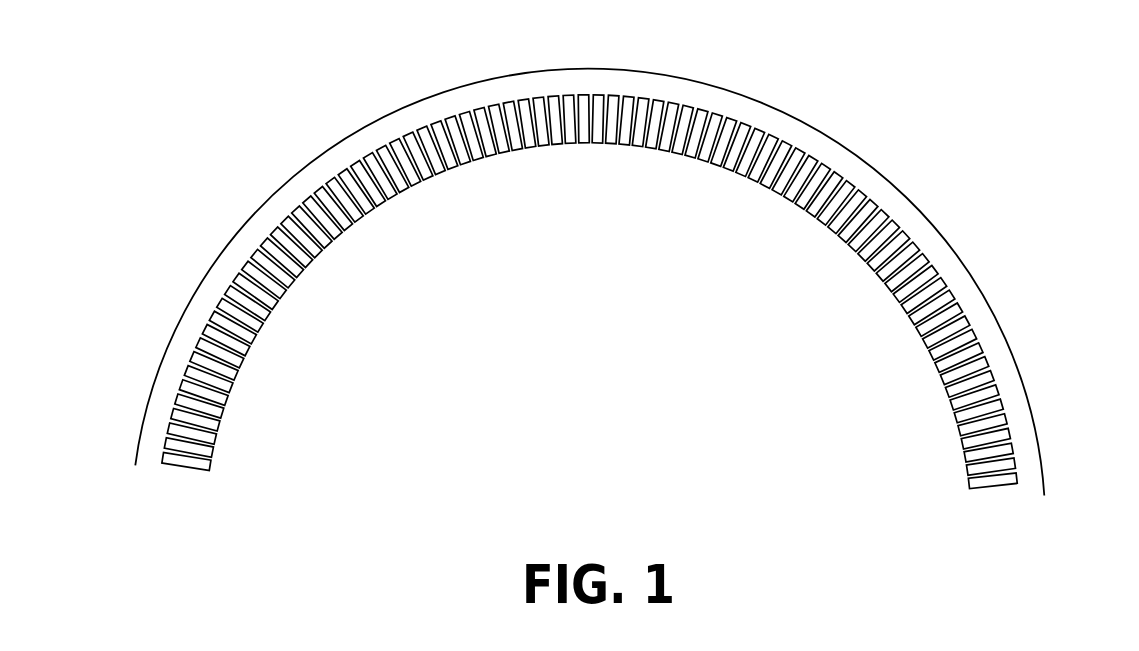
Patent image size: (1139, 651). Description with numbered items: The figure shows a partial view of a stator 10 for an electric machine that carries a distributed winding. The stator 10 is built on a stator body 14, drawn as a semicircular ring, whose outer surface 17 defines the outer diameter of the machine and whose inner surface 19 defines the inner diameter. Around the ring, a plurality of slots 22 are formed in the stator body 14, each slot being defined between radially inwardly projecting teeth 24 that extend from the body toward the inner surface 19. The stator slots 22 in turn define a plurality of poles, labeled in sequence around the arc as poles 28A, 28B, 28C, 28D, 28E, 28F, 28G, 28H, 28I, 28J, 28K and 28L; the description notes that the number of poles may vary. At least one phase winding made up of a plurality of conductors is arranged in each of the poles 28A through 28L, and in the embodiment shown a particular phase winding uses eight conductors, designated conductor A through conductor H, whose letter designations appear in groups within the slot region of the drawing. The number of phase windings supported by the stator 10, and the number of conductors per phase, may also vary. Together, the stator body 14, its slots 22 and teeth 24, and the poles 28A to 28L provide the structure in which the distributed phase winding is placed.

The stator 10 is at (298, 125).
The stator body 14 is at (227, 233).
The outer surface 17 is at (188, 305).
The inner surface 19 is at (250, 348).
The slots 22 is at (308, 287).
The teeth 24 is at (450, 120).
The pole 28A is at (153, 420).
The pole 28B is at (180, 353).
The pole 28C is at (220, 283).
The pole 28D is at (298, 195).
The pole 28E is at (390, 135).
The pole 28F is at (497, 97).
The pole 28G is at (615, 92).
The pole 28H is at (715, 102).
The pole 28I is at (835, 160).
The pole 28J is at (917, 235).
The pole 28K is at (978, 327).
The pole 28L is at (1022, 427).